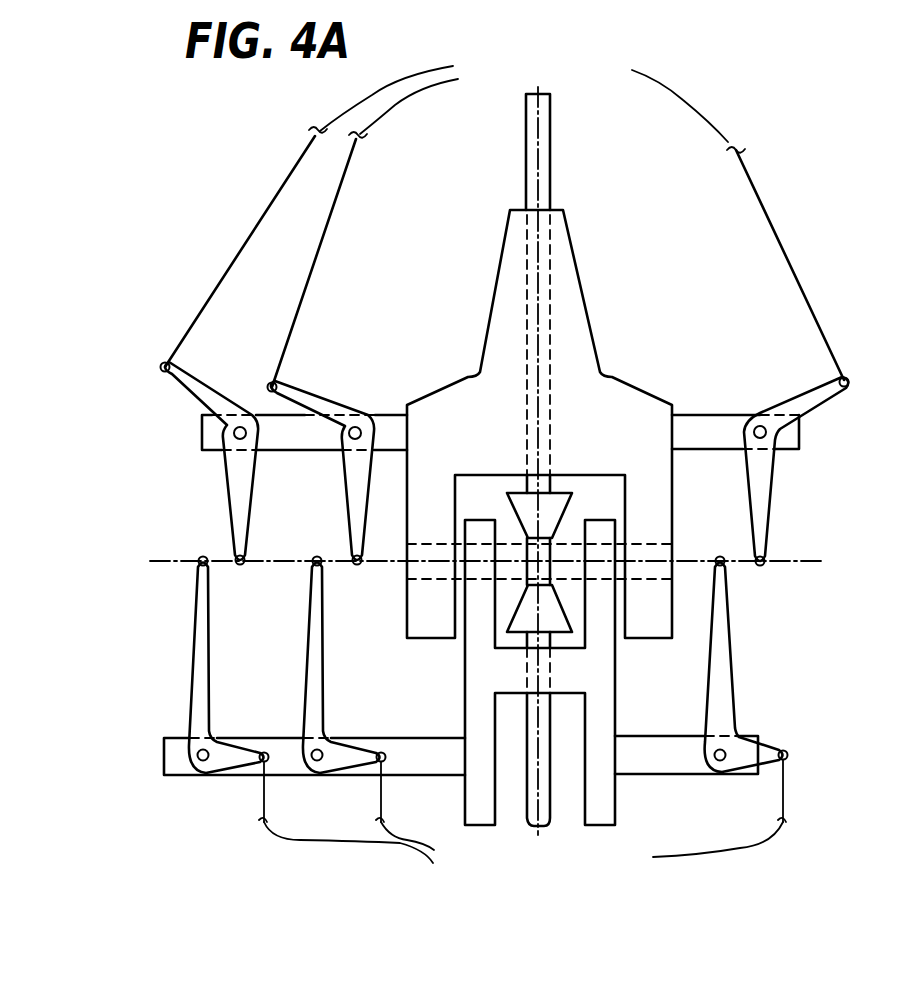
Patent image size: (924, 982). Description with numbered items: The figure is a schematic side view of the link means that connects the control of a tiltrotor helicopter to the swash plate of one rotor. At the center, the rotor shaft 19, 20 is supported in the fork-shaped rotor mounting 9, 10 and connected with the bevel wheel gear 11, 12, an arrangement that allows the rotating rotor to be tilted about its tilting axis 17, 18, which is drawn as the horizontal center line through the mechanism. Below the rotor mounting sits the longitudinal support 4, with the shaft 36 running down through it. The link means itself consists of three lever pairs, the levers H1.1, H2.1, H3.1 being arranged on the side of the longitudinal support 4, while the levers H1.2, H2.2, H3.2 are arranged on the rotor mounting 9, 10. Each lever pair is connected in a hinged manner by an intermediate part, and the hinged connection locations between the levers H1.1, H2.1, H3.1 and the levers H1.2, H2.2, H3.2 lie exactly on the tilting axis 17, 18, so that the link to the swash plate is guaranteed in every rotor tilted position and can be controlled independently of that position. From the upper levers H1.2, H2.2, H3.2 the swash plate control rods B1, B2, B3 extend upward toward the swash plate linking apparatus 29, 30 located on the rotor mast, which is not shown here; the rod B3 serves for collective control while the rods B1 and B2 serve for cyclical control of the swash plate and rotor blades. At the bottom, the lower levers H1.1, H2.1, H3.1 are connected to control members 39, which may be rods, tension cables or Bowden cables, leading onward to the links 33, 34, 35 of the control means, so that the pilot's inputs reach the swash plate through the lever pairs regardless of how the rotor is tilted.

The longitudinal support 4 is at (605, 685).
The rotor mounting 9 is at (541, 424).
The rotor mounting 10 is at (572, 313).
The bevel wheel gear 11 is at (592, 586).
The bevel wheel gear 12 is at (547, 520).
The tilting axis 17 is at (629, 454).
The tilting axis 18 is at (663, 552).
The rotor shaft 19 is at (573, 152).
The rotor shaft 20 is at (550, 161).
The swash plate linking apparatus 29 is at (524, 93).
The swash plate linking apparatus 30 is at (524, 93).
The link 33 is at (523, 851).
The link 34 is at (523, 851).
The link 35 is at (523, 851).
The output shaft 36 is at (542, 798).
The control members 39 is at (798, 780).
The swash plate control rod B1 is at (247, 238).
The swash plate control rod B2 is at (311, 267).
The swash plate control rod B3 is at (797, 272).
The lever H1.1 is at (194, 641).
The lever H1.2 is at (227, 487).
The lever H2.1 is at (309, 645).
The lever H2.2 is at (345, 487).
The lever H3.1 is at (727, 658).
The lever H3.2 is at (820, 398).